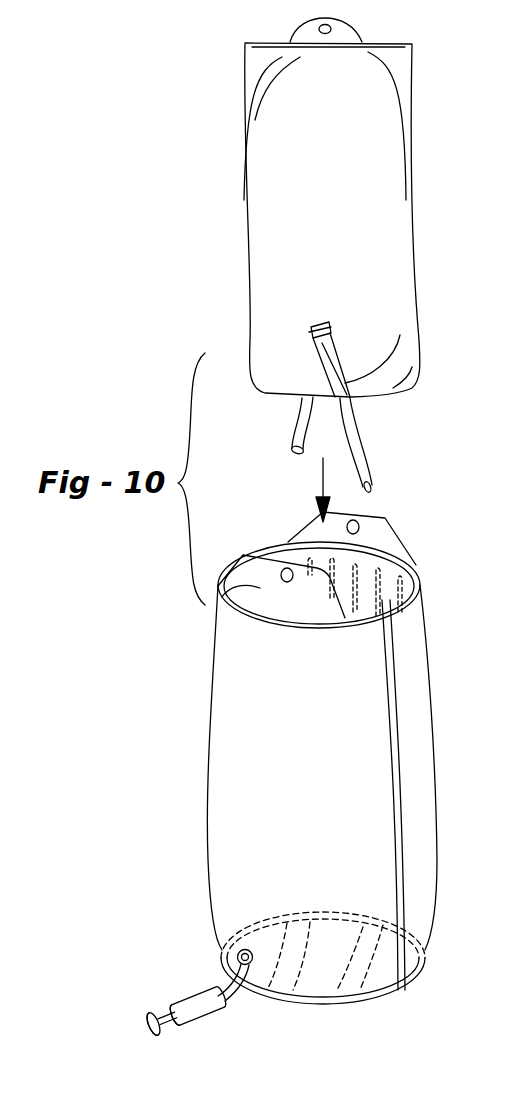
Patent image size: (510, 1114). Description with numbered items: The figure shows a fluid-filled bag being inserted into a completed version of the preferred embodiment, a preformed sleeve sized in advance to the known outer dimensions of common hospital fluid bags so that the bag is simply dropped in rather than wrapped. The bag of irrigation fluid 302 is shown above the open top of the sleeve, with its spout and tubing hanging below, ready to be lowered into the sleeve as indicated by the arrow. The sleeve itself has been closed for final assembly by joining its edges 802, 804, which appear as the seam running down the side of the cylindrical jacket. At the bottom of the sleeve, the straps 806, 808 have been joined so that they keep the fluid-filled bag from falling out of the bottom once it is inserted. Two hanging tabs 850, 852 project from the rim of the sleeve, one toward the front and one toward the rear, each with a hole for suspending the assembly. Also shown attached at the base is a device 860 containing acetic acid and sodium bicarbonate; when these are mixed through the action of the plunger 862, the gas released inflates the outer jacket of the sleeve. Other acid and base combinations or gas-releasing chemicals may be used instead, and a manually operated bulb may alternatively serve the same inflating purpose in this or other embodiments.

The bag of irrigation fluid 302 is at (332, 255).
The edge 802 is at (322, 773).
The edge 804 is at (395, 783).
The strap 806 is at (270, 980).
The strap 808 is at (352, 985).
The front hanging tab 850 is at (226, 596).
The rear hanging tab 852 is at (384, 533).
The device containing acetic acid and sodium bicarbonate 860 is at (195, 1000).
The plunger 862 is at (155, 1037).